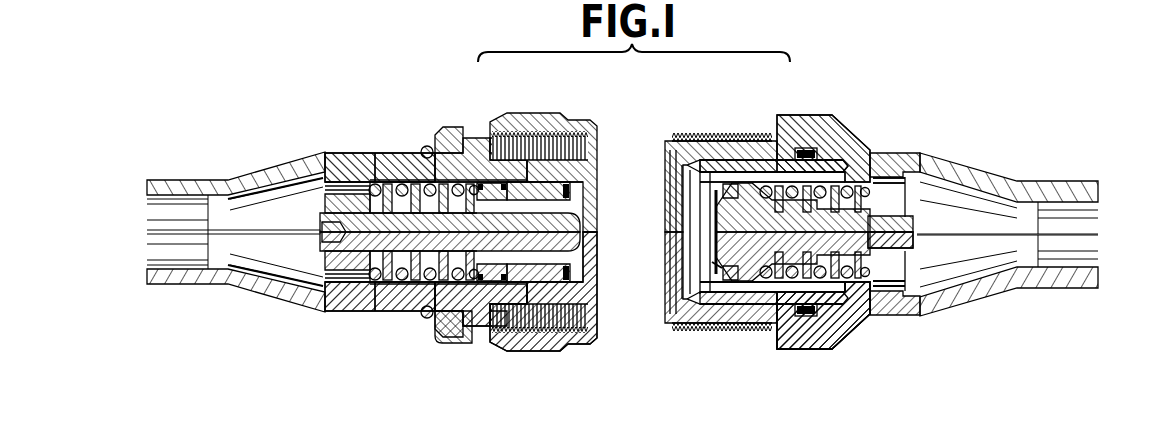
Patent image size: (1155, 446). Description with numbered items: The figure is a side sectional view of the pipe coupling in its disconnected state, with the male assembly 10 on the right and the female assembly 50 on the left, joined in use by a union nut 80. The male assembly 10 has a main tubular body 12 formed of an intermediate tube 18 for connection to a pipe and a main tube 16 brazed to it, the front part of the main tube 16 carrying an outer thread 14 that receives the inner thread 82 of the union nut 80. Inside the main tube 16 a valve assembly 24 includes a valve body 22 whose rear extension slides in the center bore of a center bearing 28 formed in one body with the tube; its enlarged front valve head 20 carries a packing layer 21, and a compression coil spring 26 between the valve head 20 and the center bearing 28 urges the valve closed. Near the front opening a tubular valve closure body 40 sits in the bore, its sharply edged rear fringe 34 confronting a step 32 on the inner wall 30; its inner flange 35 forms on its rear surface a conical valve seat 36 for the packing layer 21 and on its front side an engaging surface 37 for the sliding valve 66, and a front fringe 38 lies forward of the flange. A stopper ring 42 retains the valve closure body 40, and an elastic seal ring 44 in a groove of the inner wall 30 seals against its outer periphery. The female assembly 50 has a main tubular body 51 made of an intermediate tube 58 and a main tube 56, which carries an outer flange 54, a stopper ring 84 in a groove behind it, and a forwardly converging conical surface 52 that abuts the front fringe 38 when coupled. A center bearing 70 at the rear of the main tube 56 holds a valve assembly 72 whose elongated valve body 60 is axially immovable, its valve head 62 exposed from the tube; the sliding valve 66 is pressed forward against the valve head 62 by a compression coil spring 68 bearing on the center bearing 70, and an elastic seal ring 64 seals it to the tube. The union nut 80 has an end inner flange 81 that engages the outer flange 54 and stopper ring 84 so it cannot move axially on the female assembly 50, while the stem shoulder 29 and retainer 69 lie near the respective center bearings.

The male assembly 10 is at (950, 150).
The main tubular body 12 is at (852, 338).
The outer thread 14 is at (722, 135).
The main tube 16 is at (790, 115).
The intermediate tube 18 is at (1047, 284).
The valve head 20 is at (735, 245).
The packing layer 21 is at (715, 270).
The valve body 22 is at (903, 283).
The valve assembly 24 is at (789, 340).
The compression coil spring 26 is at (727, 338).
The center bearing 28 is at (893, 215).
The stem shoulder 29 is at (908, 248).
The inner wall 30 is at (762, 338).
The step 32 is at (828, 338).
The rear fringe 34 is at (848, 160).
The inner flange 35 is at (700, 197).
The valve seat 36 is at (713, 212).
The engaging surface 37 is at (682, 313).
The front fringe 38 is at (680, 178).
The valve closure body 40 is at (752, 160).
The stopper ring 42 is at (680, 131).
The elastic seal ring 44 is at (812, 148).
The female assembly 50 is at (304, 148).
The main tubular body 51 is at (388, 300).
The conical surface 52 is at (591, 116).
The outer flange 54 is at (480, 138).
The main tube 56 is at (393, 153).
The intermediate tube 58 is at (243, 290).
The valve body 60 is at (476, 318).
The valve head 62 is at (585, 266).
The elastic seal ring 64 is at (500, 330).
The sliding valve 66 is at (557, 340).
The compression coil spring 68 is at (430, 265).
The retainer 69 is at (360, 280).
The center bearing 70 is at (345, 256).
The valve assembly 72 is at (458, 265).
The union nut 80 is at (554, 112).
The end inner flange 81 is at (455, 127).
The inner thread 82 is at (515, 120).
The stopper ring 84 is at (428, 146).